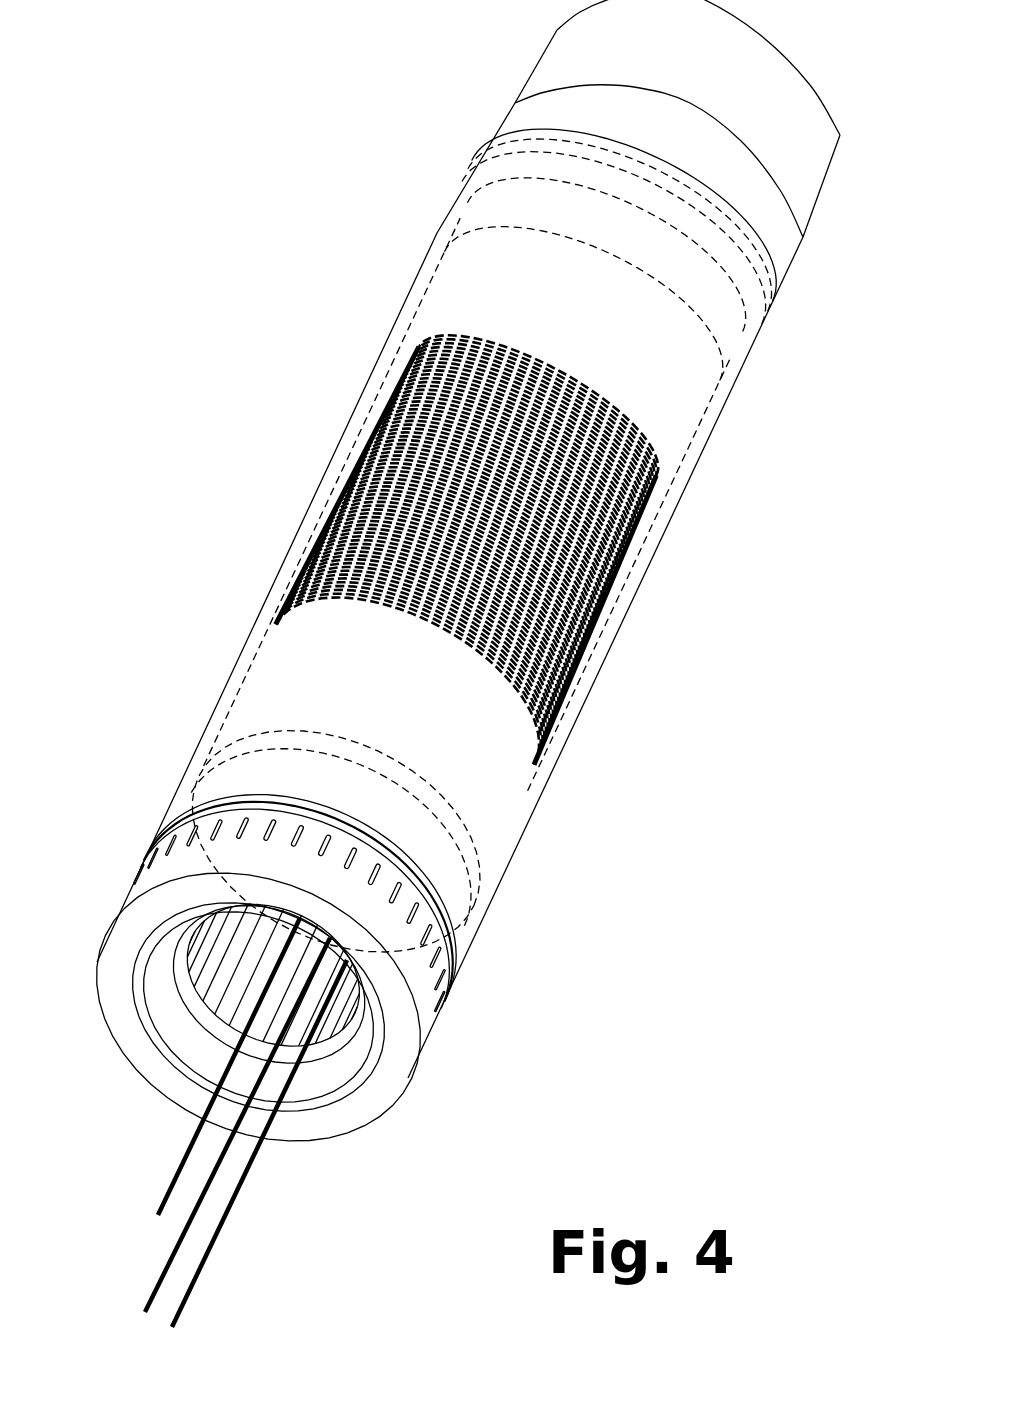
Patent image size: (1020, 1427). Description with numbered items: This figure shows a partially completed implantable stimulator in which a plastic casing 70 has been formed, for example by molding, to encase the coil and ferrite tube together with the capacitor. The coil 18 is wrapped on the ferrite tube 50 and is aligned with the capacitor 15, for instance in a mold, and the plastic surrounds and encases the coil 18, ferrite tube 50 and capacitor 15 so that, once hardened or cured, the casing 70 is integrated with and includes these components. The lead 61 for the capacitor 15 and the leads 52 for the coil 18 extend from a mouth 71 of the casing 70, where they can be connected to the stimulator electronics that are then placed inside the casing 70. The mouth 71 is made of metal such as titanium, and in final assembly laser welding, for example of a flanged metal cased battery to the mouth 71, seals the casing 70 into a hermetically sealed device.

The capacitor 15 is at (578, 56).
The coil 18 is at (560, 610).
The ferrite tube 50 is at (484, 769).
The leads 52 is at (160, 1278).
The lead 61 is at (186, 1158).
The casing 70 is at (262, 612).
The mouth 71 is at (342, 1060).